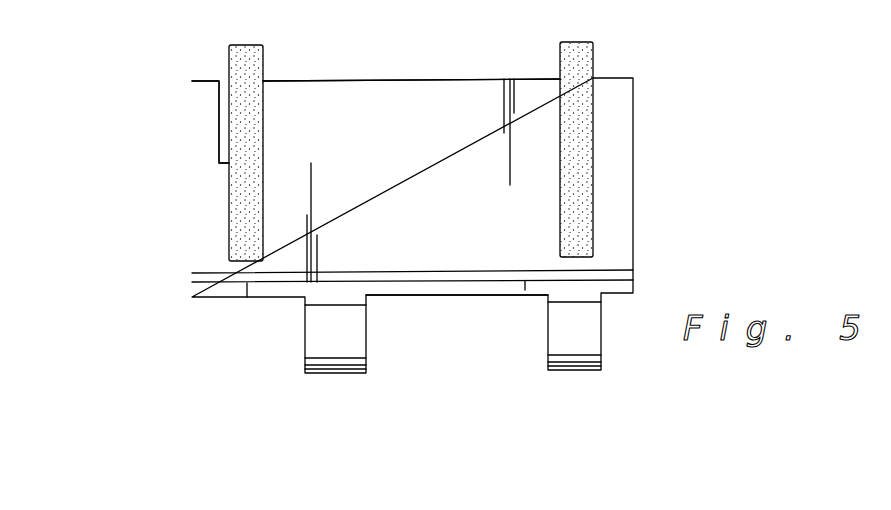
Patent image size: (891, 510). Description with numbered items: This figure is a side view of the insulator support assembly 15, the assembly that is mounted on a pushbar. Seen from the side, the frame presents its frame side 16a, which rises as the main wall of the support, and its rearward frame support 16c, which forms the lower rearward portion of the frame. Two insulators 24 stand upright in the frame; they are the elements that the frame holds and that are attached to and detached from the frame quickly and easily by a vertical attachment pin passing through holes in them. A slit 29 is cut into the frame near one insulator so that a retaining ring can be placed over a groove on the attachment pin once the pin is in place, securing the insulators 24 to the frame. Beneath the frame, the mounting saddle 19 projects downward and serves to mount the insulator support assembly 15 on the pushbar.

The insulator support assembly 15 is at (692, 58).
The frame side 16a is at (386, 175).
The rearward frame support 16c is at (425, 304).
The mounting saddle 19 is at (315, 345).
The insulators 24 is at (252, 65).
The slit 29 is at (225, 90).